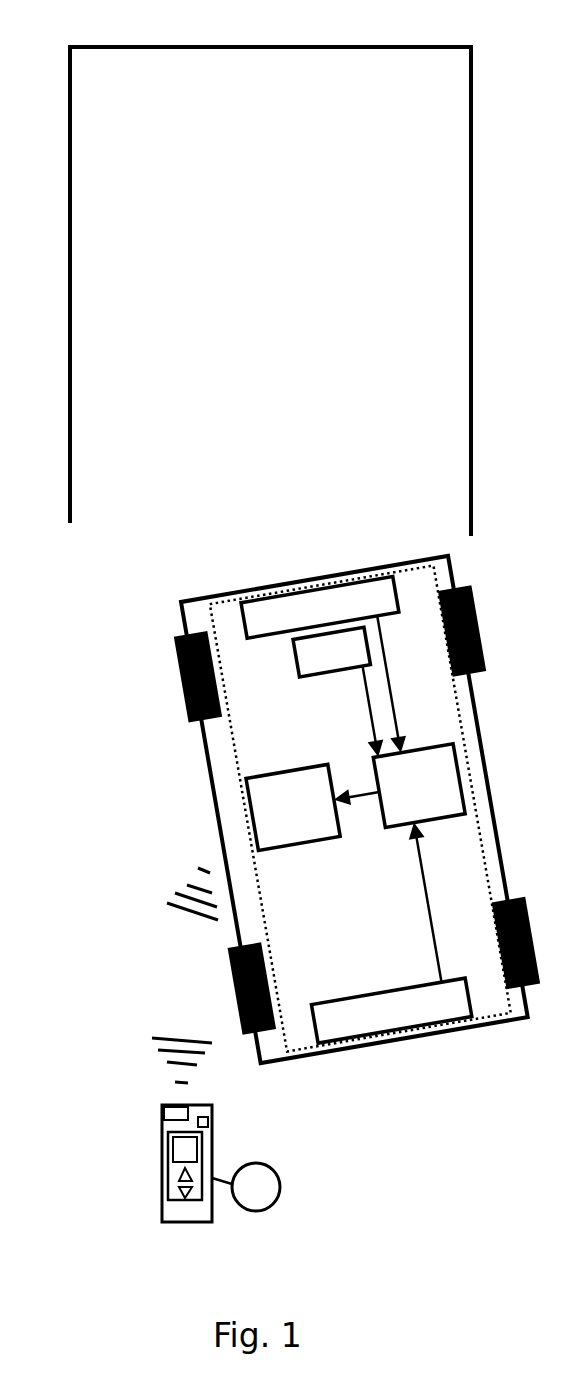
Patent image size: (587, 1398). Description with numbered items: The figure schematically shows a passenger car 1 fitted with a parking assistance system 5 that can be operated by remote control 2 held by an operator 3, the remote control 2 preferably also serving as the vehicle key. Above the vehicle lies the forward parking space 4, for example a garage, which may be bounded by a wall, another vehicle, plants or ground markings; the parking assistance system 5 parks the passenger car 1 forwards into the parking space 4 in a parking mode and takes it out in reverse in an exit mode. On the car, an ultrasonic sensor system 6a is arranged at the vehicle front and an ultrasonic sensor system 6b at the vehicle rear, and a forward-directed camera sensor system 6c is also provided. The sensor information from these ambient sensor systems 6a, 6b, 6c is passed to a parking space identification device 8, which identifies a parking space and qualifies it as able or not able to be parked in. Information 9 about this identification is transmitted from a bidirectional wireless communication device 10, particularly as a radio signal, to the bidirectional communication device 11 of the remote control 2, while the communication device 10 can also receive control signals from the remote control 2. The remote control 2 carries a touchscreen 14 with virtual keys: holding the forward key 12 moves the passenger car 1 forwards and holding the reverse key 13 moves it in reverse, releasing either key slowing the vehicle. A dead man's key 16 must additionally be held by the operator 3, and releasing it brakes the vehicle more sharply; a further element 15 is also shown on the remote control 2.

The passenger car 1 is at (190, 600).
The remote control 2 is at (195, 1105).
The operator 3 is at (280, 1192).
The forward parking space 4 is at (83, 47).
The parking assistance system 5 is at (265, 922).
The ultrasonic sensor system 6a is at (320, 608).
The ultrasonic sensor system 6b is at (391, 1010).
The camera sensor system 6c is at (331, 652).
The parking space identification device 8 is at (419, 786).
The information 9 is at (369, 795).
The bidirectional wireless communication device 10 is at (293, 807).
The bidirectional communication device 11 is at (167, 1113).
The forward key 12 is at (189, 1172).
The reverse key 13 is at (183, 1197).
The touchscreen 14 is at (167, 1187).
The display 15 is at (172, 1140).
The dead man's key 16 is at (212, 1120).